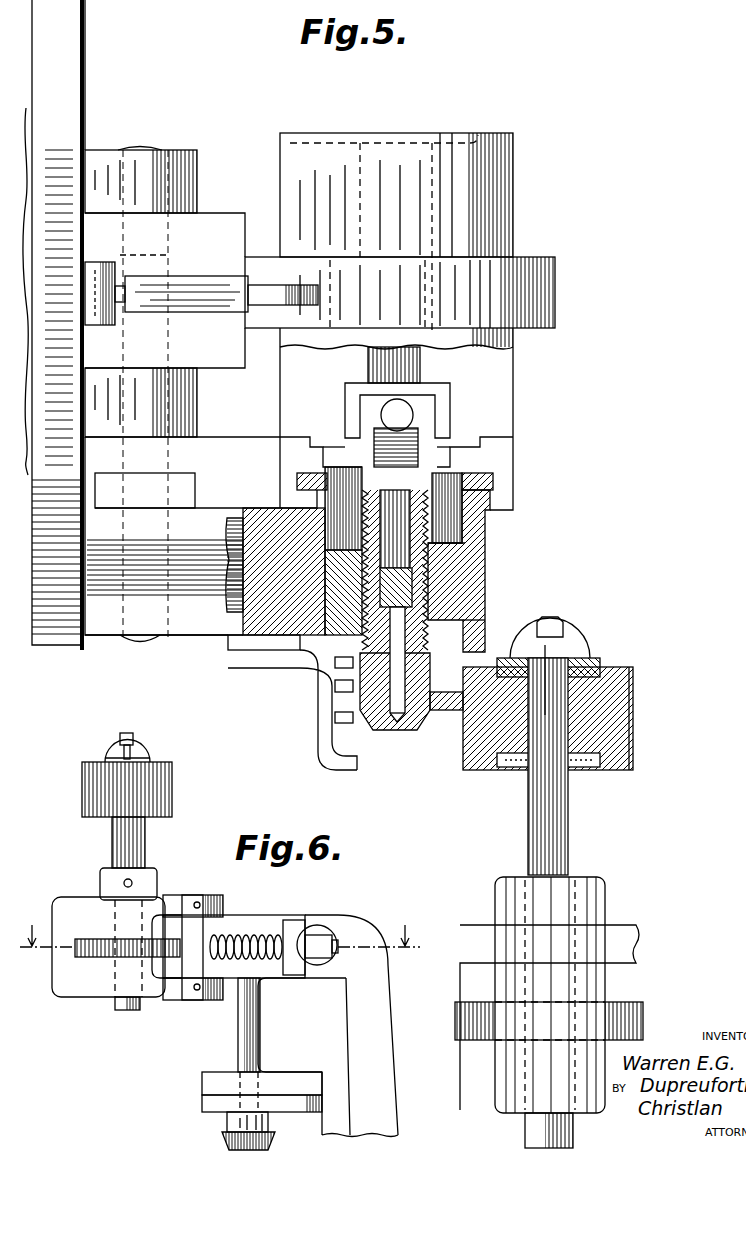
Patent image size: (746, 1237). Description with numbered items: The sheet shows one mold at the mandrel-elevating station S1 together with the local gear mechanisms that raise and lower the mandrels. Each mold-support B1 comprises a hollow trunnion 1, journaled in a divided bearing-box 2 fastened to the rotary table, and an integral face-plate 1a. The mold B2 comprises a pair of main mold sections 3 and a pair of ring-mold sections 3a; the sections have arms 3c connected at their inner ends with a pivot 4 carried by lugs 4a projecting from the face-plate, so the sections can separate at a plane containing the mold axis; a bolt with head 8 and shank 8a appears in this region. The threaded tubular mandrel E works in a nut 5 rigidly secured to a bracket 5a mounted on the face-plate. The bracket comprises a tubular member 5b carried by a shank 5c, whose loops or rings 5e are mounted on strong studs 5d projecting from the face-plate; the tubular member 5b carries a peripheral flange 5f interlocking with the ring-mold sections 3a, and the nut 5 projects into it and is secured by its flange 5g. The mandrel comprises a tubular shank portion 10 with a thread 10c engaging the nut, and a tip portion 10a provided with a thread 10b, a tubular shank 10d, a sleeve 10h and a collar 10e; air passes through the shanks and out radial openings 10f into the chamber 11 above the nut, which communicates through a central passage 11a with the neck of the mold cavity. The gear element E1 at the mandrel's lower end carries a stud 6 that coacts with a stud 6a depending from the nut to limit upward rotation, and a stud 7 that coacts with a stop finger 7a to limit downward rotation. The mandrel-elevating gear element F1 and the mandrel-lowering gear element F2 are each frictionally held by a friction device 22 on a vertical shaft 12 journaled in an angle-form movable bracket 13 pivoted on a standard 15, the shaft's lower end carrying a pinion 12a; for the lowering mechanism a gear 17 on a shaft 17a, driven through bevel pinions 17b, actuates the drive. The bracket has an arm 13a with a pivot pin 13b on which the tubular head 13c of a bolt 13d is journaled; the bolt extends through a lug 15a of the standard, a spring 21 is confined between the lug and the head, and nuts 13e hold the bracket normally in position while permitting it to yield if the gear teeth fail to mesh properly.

In FIG. 5, the hollow trunnion 1 is at (33, 153).
In FIG. 5, the mold-support B1 is at (70, 52).
In FIG. 5, the face-plate 1a is at (74, 98).
In FIG. 5, the pivot 4 is at (146, 149).
In FIG. 5, the lugs 4a is at (185, 173).
In FIG. 5, the arms 3c is at (218, 220).
In FIG. 5, the bolt head 8 is at (90, 263).
In FIG. 5, the bolt shank 8a is at (204, 260).
In FIG. 5, the main mold sections 3 is at (513, 200).
In FIG. 5, the mold B2 is at (431, 419).
In FIG. 5, the ring-mold sections 3a is at (513, 455).
In FIG. 5, the tip portion 10a is at (420, 390).
In FIG. 5, the thread 10b is at (383, 413).
In FIG. 5, the central passage 11a is at (424, 446).
In FIG. 5, the radial openings 10f is at (332, 456).
In FIG. 5, the collar 10e is at (451, 456).
In FIG. 5, the nut 5 is at (468, 562).
In FIG. 5, the shank 5c is at (254, 512).
In FIG. 5, the loops or rings 5e is at (232, 517).
In FIG. 5, the tubular shank 10d is at (297, 480).
In FIG. 5, the sleeve 10h is at (343, 551).
In FIG. 5, the tubular shank portion 10 is at (490, 522).
In FIG. 5, the chamber 11 is at (448, 500).
In FIG. 5, the peripheral flange 5f is at (493, 483).
In FIG. 5, the tubular member 5b is at (484, 586).
In FIG. 5, the thread 10c is at (468, 540).
In FIG. 5, the flange 5g is at (486, 642).
In FIG. 5, the studs 5d is at (112, 625).
In FIG. 5, the bracket 5a is at (232, 657).
In FIG. 5, the stop or finger 7a is at (345, 773).
In FIG. 5, the stud 6a is at (334, 663).
In FIG. 5, the stud 6 is at (334, 688).
In FIG. 5, the stud 7 is at (334, 718).
In FIG. 5, the threaded tubular mandrel E is at (412, 738).
In FIG. 5, the gear element E1 is at (446, 710).
In FIG. 5, the mandrel-elevating gear element F1 is at (633, 716).
In FIG. 5, the friction device 22 is at (590, 660).
In FIG. 6, the friction device 22 is at (146, 760).
In FIG. 5, the vertical shaft 12 is at (565, 845).
In FIG. 6, the vertical shaft 12 is at (110, 853).
In FIG. 5, the movable bracket 13 is at (605, 922).
In FIG. 6, the movable bracket 13 is at (60, 994).
In FIG. 5, the pinion 12a is at (618, 1006).
In FIG. 6, the pinion 12a is at (88, 940).
In FIG. 5, the mandrel-elevating station S1 is at (667, 455).
In FIG. 6, the mandrel-lowering gear element F2 is at (173, 785).
In FIG. 6, the divided bearing-box 2 is at (220, 949).
In FIG. 6, the pivot pin 13b is at (205, 895).
In FIG. 6, the tubular head 13c is at (185, 958).
In FIG. 6, the arm 13a is at (225, 915).
In FIG. 6, the spring 21 is at (240, 945).
In FIG. 6, the gear 17 is at (285, 915).
In FIG. 6, the nuts 13e is at (338, 910).
In FIG. 6, the bolt 13d is at (340, 935).
In FIG. 6, the standard 15 is at (351, 1026).
In FIG. 6, the lug 15a is at (302, 1025).
In FIG. 6, the shaft 17a is at (237, 1045).
In FIG. 6, the bevel pinions 17b is at (221, 1141).